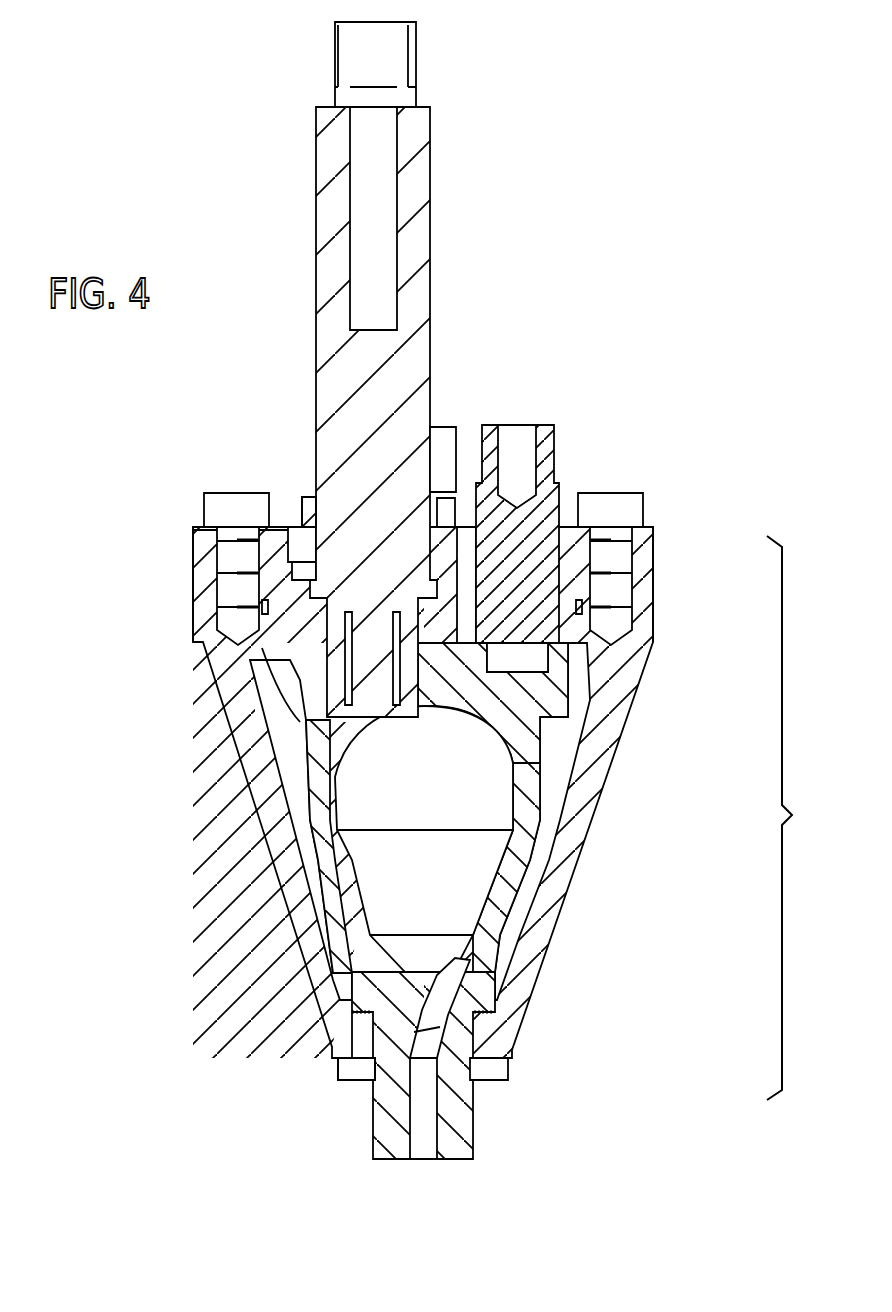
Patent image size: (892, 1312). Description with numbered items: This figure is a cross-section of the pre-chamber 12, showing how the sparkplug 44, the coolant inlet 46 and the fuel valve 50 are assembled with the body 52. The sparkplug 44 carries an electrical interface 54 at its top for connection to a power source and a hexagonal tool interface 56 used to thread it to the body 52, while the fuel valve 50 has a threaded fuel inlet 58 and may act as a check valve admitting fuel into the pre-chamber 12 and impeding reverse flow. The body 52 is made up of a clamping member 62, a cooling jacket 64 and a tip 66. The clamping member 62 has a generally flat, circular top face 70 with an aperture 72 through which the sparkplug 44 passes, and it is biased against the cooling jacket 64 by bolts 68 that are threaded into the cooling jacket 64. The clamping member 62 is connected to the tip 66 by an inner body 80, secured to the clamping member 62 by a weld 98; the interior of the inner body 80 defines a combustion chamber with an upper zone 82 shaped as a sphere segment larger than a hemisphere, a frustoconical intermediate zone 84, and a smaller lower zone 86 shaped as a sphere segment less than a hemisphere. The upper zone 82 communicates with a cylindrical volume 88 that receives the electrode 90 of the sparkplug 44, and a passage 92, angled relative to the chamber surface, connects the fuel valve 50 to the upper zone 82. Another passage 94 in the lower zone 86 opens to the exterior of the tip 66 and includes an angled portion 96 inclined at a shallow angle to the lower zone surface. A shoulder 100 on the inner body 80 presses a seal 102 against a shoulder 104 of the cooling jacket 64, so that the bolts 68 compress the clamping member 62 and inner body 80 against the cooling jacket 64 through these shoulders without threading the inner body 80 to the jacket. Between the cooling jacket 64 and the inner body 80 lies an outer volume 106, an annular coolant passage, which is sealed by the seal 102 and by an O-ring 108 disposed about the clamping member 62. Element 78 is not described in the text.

The pre-chamber 12 is at (612, 215).
The sparkplug 44 is at (374, 369).
The coolant inlet 46 is at (458, 432).
The fuel valve 50 is at (534, 518).
The body 52 is at (795, 818).
The electrical interface 54 is at (425, 57).
The hexagonal tool interface 56 is at (316, 123).
The threaded fuel inlet 58 is at (521, 432).
The clamping member 62 is at (653, 560).
The cooling jacket 64 is at (429, 775).
The tip 66 is at (421, 1077).
The bolts 68 is at (240, 492).
The top face 70 is at (193, 527).
The aperture 72 is at (303, 512).
The retaining tab 78 is at (355, 1080).
The inner body 80 is at (530, 888).
The upper zone 82 is at (424, 841).
The intermediate zone 84 is at (425, 867).
The lower zone 86 is at (421, 948).
The cylindrical volume 88 is at (332, 745).
The electrode 90 is at (332, 753).
The passage 92 is at (507, 683).
The passage 94 is at (423, 1152).
The angled portion 96 is at (470, 990).
The weld 98 is at (570, 643).
The shoulder 100 is at (355, 1012).
The seal 102 is at (477, 1027).
The shoulder 104 is at (370, 1020).
The outer volume 106 is at (557, 753).
The O-ring 108 is at (262, 645).